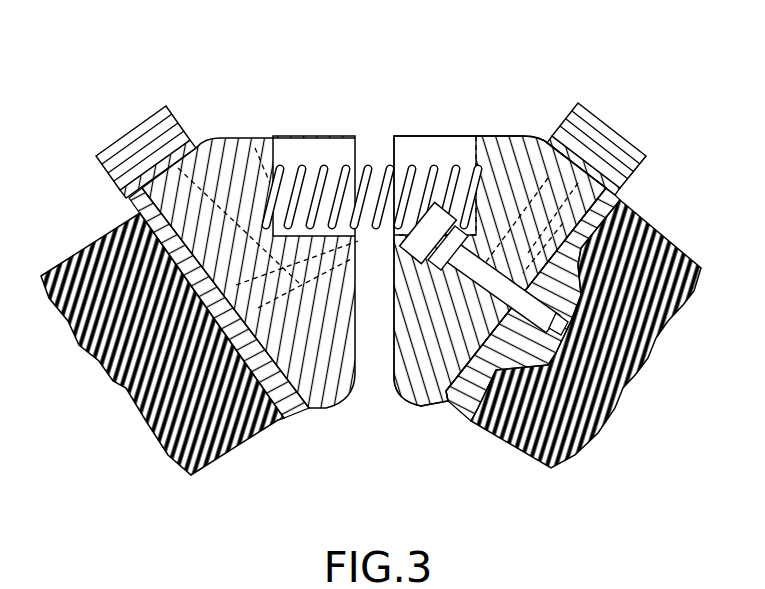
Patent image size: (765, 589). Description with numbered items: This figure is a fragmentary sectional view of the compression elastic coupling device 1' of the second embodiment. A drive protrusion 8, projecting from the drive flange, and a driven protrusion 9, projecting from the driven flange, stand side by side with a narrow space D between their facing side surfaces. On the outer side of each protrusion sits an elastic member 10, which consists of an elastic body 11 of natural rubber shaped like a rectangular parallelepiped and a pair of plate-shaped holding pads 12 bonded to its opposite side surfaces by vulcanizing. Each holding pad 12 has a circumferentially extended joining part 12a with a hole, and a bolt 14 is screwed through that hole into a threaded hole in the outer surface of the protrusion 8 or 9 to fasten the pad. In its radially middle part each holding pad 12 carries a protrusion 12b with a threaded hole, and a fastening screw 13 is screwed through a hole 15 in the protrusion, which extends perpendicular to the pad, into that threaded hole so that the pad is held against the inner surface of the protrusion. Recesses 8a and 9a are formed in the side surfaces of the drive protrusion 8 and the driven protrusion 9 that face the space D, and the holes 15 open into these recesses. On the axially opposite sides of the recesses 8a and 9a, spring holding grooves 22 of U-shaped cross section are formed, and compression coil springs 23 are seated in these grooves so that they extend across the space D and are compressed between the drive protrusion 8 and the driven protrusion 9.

The compression elastic coupling device 1' is at (643, 53).
The drive protrusion 8 is at (204, 147).
The recess 8a is at (358, 240).
The driven protrusion 9 is at (500, 142).
The recess 9a is at (383, 280).
The elastic member 10 is at (375, 331).
The elastic body 11 is at (177, 375).
The holding pad 12 is at (217, 385).
The joining part 12a is at (176, 140).
The protrusion 12b is at (200, 322).
The fastening screw 13 is at (290, 395).
The bolt 14 is at (135, 135).
The hole 15 is at (318, 350).
The spring holding groove 22 is at (278, 150).
The compression coil spring 23 is at (336, 146).
The narrow space D is at (374, 104).